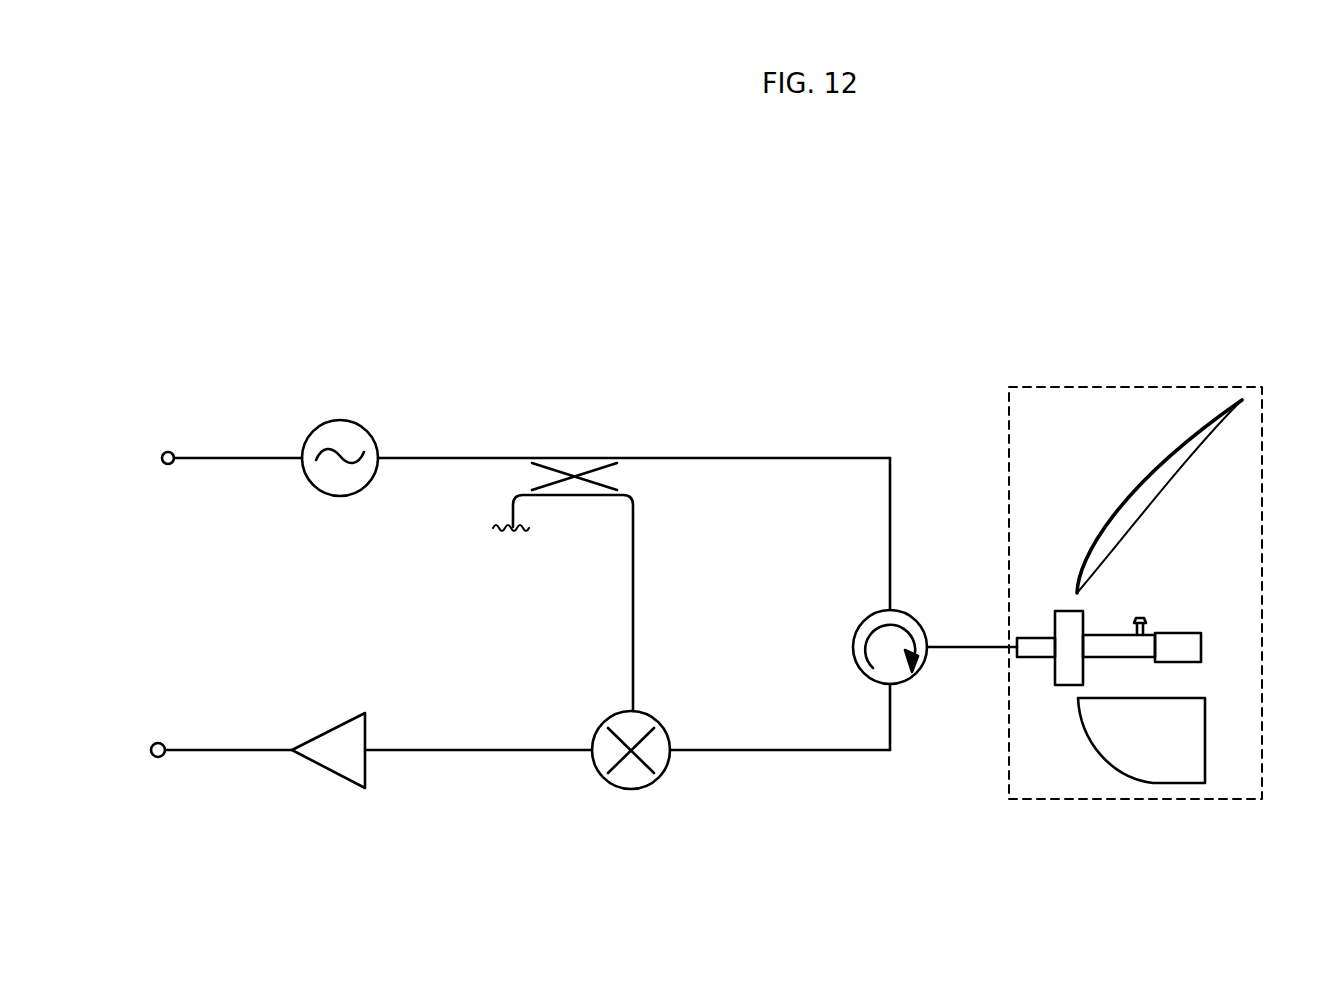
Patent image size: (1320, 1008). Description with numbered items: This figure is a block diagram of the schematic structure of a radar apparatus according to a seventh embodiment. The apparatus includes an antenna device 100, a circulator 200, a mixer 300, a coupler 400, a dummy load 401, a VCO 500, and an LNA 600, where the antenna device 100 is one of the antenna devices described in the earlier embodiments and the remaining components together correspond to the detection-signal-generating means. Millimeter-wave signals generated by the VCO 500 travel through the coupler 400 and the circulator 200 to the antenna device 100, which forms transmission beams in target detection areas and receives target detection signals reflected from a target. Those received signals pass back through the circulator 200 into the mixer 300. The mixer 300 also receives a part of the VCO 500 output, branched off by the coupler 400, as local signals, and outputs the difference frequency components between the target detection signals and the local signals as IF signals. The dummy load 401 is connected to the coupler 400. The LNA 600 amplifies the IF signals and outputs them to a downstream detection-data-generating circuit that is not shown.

The antenna device 100 is at (1187, 386).
The circulator 200 is at (906, 613).
The mixer 300 is at (658, 722).
The coupler 400 is at (624, 444).
The dummy load 401 is at (492, 550).
The VCO 500 is at (368, 430).
The LNA 600 is at (367, 726).